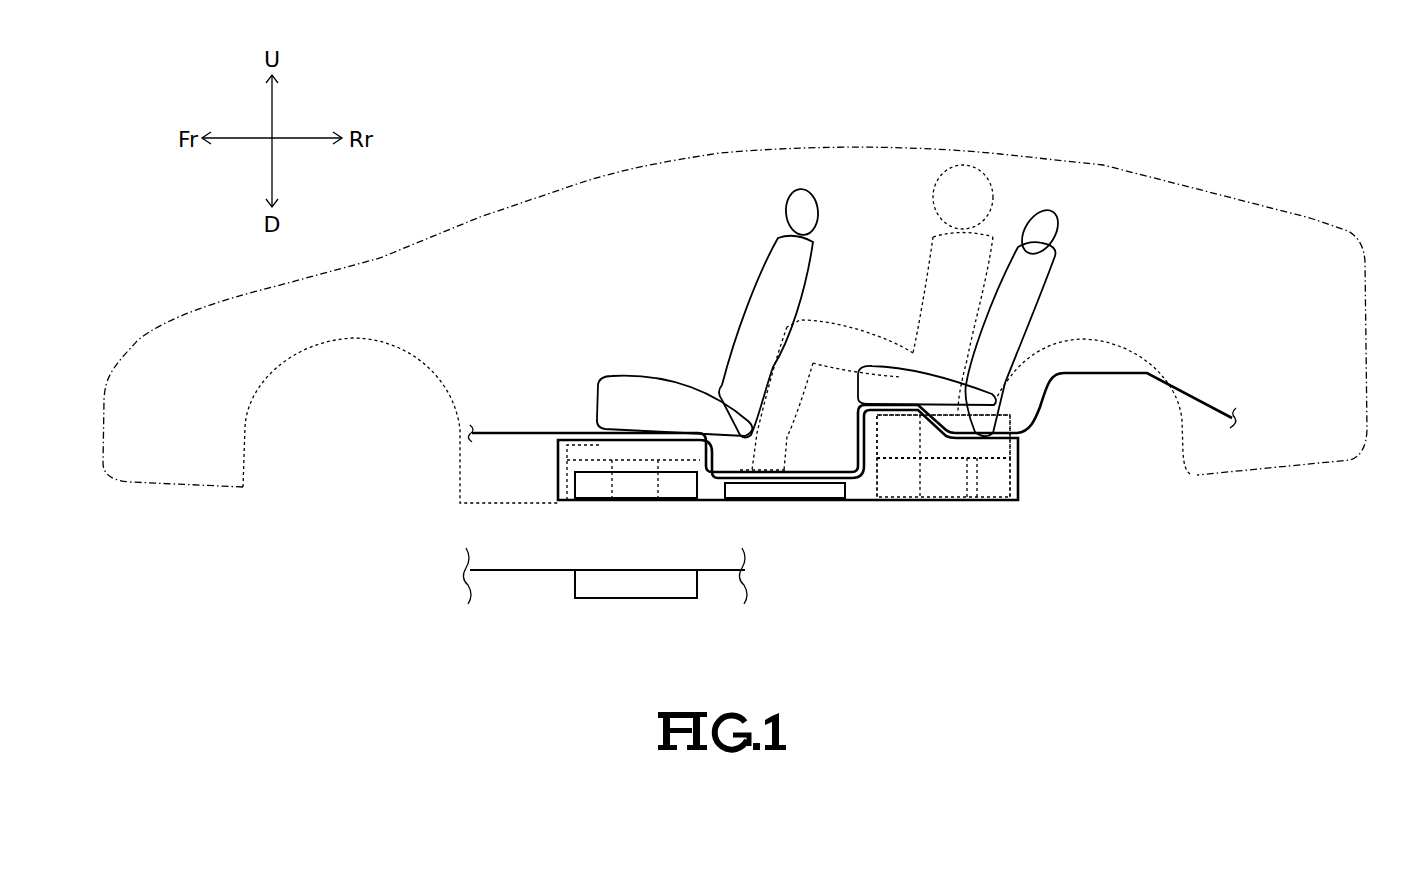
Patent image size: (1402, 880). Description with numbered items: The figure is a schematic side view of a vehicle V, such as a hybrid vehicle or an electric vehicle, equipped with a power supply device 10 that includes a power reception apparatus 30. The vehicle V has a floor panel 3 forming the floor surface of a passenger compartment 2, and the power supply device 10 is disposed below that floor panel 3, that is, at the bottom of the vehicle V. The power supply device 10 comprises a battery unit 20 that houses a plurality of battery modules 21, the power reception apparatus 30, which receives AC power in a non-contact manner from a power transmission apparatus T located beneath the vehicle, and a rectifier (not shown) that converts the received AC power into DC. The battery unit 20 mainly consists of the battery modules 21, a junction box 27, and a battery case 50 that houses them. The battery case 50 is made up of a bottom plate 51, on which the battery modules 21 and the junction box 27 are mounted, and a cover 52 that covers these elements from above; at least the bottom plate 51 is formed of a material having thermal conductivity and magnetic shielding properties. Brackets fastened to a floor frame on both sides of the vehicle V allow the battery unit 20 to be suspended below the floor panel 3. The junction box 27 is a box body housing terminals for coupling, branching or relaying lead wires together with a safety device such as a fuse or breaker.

The vehicle V is at (1047, 137).
The passenger compartment 2 is at (868, 270).
The floor panel 3 is at (550, 432).
The power supply device 10 is at (556, 480).
The battery unit 20 is at (788, 455).
The battery module 21 is at (583, 460).
The junction box 27 is at (808, 499).
The power reception apparatus 30 is at (573, 490).
The battery case 50 is at (1098, 428).
The bottom plate 51 is at (998, 503).
The cover 52 is at (1020, 443).
The power transmission apparatus T is at (652, 600).